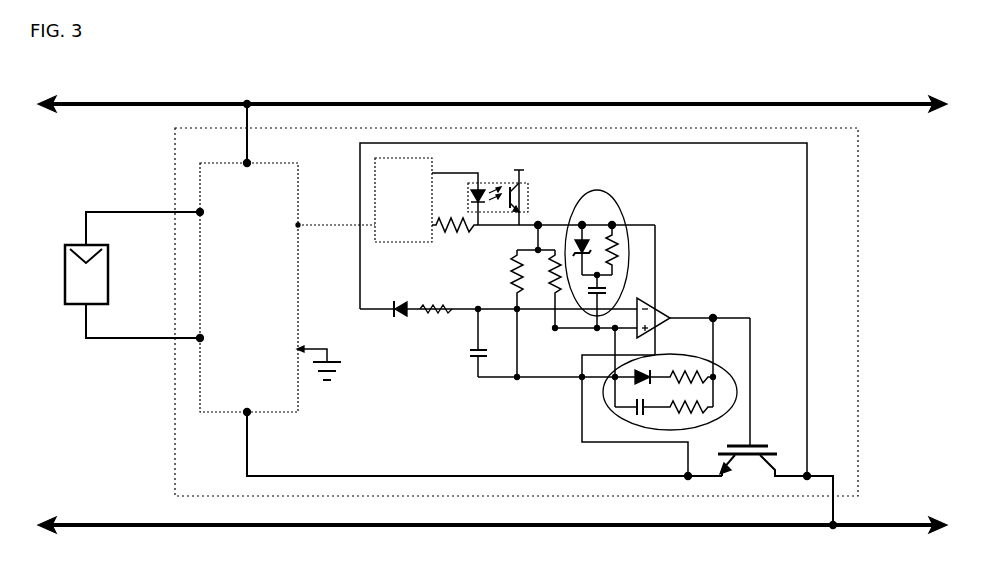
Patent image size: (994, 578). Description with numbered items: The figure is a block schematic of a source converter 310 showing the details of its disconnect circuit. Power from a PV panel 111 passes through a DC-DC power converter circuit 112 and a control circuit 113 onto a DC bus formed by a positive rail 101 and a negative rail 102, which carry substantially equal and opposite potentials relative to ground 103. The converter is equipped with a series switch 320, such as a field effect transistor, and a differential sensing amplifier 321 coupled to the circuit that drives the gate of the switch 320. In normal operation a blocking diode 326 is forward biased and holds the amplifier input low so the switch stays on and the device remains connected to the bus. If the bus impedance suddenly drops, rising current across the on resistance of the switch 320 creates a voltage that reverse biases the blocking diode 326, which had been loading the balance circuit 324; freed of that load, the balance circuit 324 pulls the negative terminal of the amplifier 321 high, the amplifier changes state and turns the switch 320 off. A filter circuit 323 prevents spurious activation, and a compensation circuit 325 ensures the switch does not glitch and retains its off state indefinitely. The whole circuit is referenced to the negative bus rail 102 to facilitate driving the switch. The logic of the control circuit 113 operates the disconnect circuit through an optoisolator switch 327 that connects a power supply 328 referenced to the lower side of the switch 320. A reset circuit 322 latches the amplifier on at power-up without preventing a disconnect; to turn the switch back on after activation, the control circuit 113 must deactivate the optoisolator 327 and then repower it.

The positive rail 101 is at (492, 98).
The negative rail 102 is at (492, 533).
The ground 103 is at (319, 356).
The PV panel 111 is at (134, 275).
The DC-DC power converter circuit 112 is at (461, 290).
The control circuit 113 is at (387, 200).
The source converter 310 is at (504, 312).
The series switch 320 is at (756, 444).
The differential sensing amplifier 321 is at (668, 314).
The reset circuit 322 is at (621, 216).
The filter circuit 323 is at (476, 330).
The balance circuit 324 is at (508, 348).
The compensation circuit 325 is at (613, 412).
The blocking diode 326 is at (401, 300).
The optoisolator switch 327 is at (495, 183).
The power supply 328 is at (524, 170).